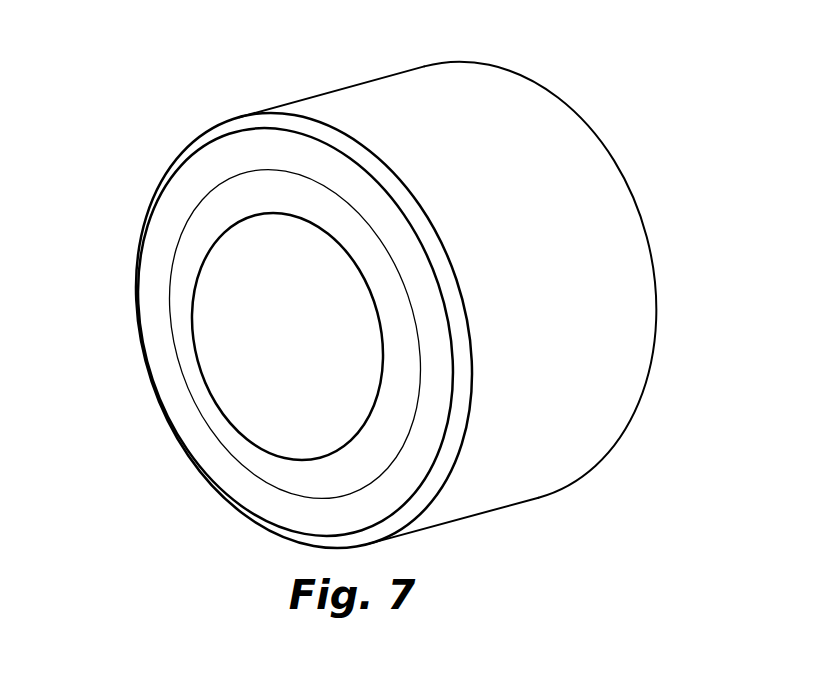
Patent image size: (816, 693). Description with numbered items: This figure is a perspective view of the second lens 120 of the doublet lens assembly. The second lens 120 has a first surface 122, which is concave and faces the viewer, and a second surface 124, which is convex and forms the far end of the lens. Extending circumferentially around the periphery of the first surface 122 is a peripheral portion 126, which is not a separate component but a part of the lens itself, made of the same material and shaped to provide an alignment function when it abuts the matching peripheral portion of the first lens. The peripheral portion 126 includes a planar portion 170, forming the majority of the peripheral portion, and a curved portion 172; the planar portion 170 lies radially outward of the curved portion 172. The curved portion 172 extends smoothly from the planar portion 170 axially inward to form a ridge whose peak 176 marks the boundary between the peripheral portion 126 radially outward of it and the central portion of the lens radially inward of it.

The second lens 120 is at (397, 102).
The first surface 122 is at (275, 417).
The second surface 124 is at (642, 223).
The peripheral portion 126 is at (232, 373).
The planar portion 170 is at (413, 447).
The curved portion 172 is at (313, 468).
The peak 176 is at (237, 222).